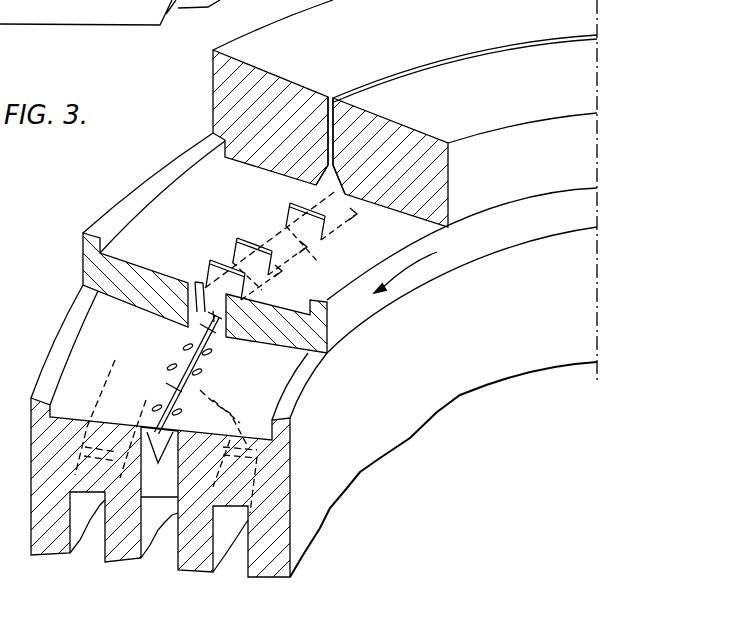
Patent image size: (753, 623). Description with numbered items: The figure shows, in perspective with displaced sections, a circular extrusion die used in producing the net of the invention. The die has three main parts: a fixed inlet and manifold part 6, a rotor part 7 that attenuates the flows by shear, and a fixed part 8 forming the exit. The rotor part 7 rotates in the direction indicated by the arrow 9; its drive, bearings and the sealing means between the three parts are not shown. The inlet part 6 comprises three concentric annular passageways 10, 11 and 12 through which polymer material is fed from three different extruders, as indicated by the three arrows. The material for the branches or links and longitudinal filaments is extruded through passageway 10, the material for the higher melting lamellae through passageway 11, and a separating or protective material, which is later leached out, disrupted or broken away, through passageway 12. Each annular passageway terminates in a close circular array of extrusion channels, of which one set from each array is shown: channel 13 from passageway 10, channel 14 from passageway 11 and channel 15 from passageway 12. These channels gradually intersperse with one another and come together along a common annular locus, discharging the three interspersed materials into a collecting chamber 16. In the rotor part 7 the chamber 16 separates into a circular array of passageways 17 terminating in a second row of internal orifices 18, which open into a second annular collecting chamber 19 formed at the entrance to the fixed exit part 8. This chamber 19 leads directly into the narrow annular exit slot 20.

The fixed inlet and manifold part 6 is at (351, 425).
The rotor part 7 is at (357, 316).
The fixed part 8 is at (492, 173).
The arrow 9 is at (437, 252).
The annular passageway 10 is at (242, 563).
The annular passageway 11 is at (159, 563).
The annular passageway 12 is at (100, 545).
The extrusion channel 13 is at (205, 403).
The extrusion channel 14 is at (172, 492).
The extrusion channel 15 is at (146, 400).
The collecting chamber 16 is at (194, 326).
The passageway 17 is at (200, 283).
The internal orifice 18 is at (238, 241).
The second annular collecting chamber 19 is at (334, 184).
The annular exit slot 20 is at (405, 68).